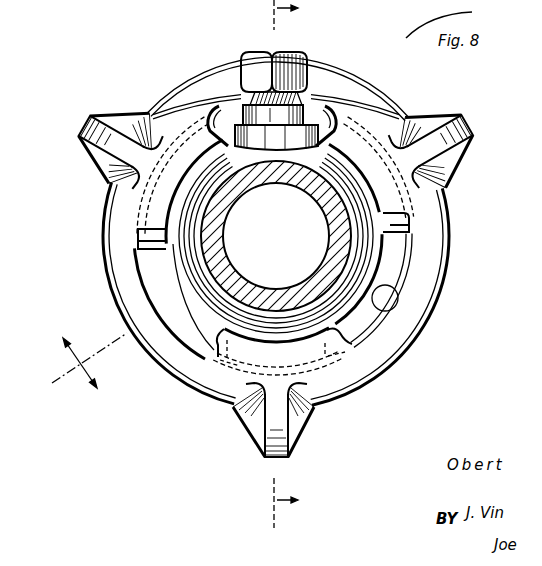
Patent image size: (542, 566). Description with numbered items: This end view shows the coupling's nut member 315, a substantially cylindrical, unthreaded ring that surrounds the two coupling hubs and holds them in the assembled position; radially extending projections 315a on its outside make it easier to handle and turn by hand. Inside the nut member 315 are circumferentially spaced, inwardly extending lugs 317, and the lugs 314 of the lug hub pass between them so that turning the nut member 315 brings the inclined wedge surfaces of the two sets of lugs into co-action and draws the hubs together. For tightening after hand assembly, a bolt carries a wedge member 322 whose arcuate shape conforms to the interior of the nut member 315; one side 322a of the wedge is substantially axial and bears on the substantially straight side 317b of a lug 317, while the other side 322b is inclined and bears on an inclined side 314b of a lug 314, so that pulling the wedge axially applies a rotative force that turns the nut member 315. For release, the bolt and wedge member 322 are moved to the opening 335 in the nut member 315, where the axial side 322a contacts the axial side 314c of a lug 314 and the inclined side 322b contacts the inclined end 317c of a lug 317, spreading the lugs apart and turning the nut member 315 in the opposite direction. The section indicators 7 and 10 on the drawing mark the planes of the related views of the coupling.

The section line 7- 7 is at (294, 264).
The section line 10- 10 is at (87, 365).
The lugs 314 is at (150, 256).
The inclined side 314b is at (333, 113).
The substantially axial side 314c is at (400, 233).
The nut member 315 is at (441, 225).
The radially extending projections 315a is at (105, 128).
The lugs 317 is at (153, 210).
The substantially straight side 317b is at (219, 106).
The inclined end 317c is at (352, 344).
The wedge member 322 is at (309, 110).
The substantially axially disposed side 322a is at (214, 113).
The inclined side 322b is at (348, 123).
The opening 335 is at (387, 299).